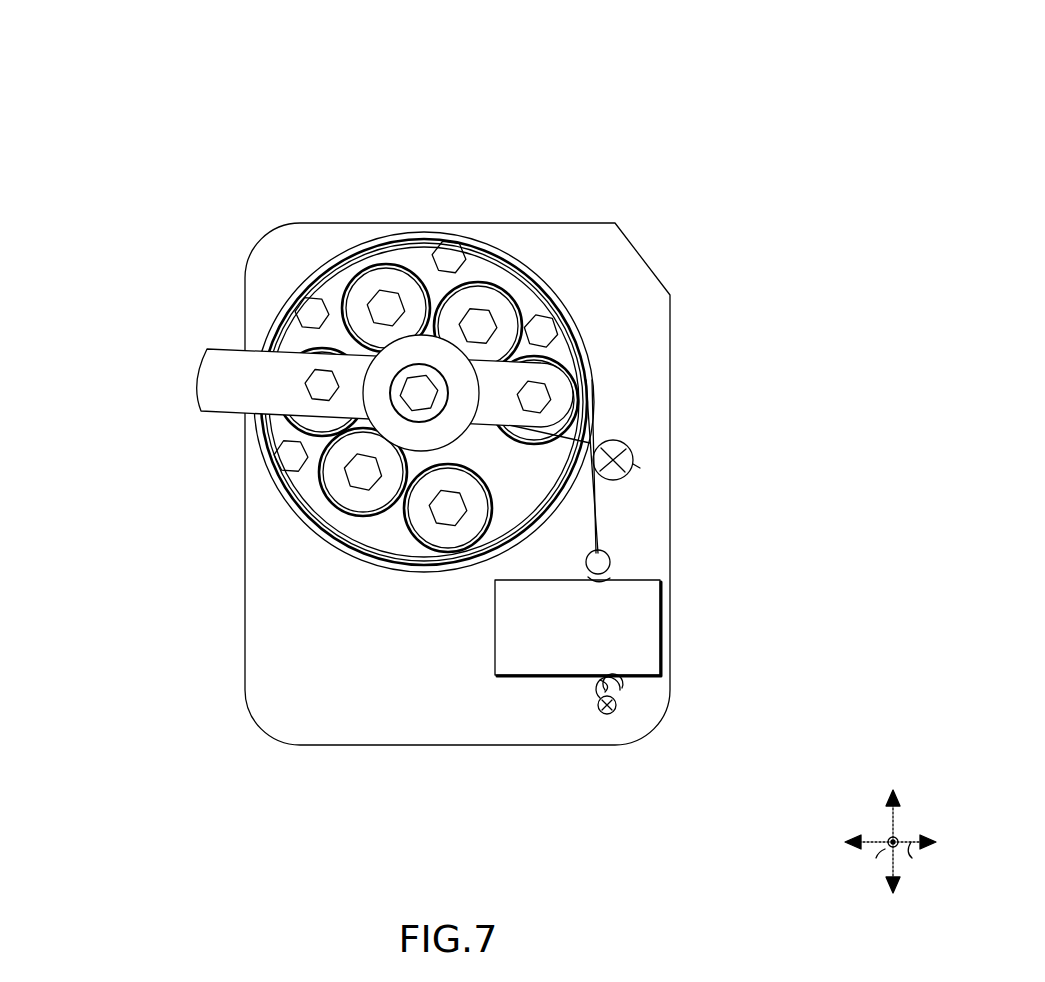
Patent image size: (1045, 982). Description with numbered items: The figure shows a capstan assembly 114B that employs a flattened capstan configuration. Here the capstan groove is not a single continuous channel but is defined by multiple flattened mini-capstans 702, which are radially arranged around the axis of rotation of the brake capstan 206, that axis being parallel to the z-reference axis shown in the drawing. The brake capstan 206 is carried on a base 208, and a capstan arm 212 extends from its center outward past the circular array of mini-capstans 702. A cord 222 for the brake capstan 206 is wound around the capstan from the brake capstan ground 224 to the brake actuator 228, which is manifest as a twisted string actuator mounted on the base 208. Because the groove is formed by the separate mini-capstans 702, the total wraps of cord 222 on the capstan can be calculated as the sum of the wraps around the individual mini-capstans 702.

The capstan assembly 114B is at (733, 63).
The mini-capstans 702 is at (352, 284).
The brake capstan 206 is at (445, 240).
The capstan arm 212 is at (197, 402).
The brake capstan ground 224 is at (640, 468).
The cord 222 is at (600, 505).
The brake actuator 228 is at (578, 647).
The base 208 is at (245, 668).